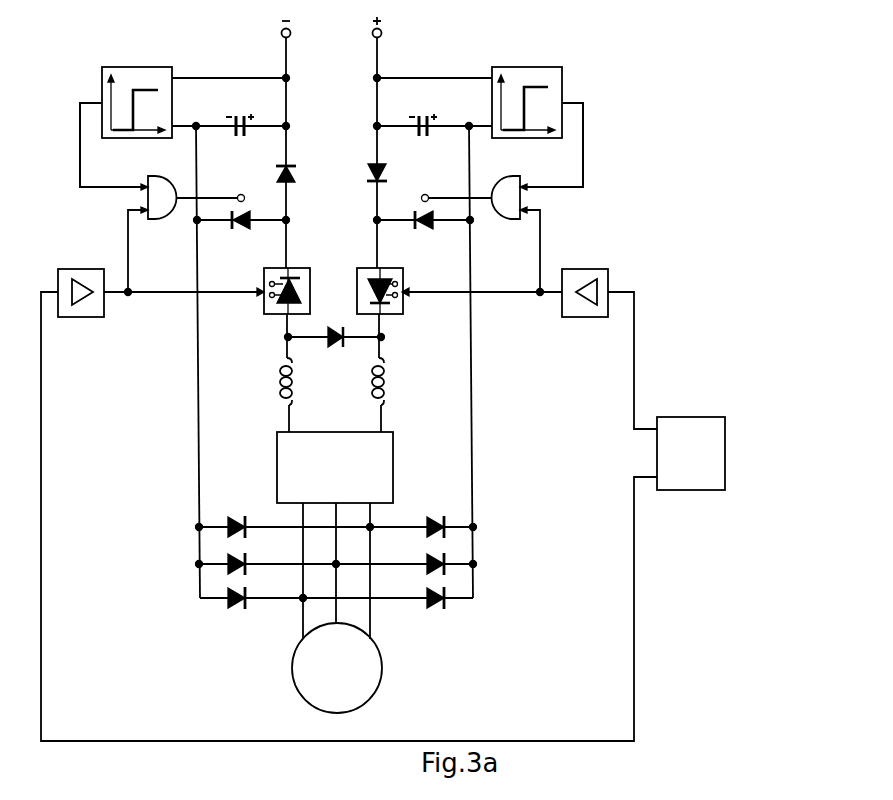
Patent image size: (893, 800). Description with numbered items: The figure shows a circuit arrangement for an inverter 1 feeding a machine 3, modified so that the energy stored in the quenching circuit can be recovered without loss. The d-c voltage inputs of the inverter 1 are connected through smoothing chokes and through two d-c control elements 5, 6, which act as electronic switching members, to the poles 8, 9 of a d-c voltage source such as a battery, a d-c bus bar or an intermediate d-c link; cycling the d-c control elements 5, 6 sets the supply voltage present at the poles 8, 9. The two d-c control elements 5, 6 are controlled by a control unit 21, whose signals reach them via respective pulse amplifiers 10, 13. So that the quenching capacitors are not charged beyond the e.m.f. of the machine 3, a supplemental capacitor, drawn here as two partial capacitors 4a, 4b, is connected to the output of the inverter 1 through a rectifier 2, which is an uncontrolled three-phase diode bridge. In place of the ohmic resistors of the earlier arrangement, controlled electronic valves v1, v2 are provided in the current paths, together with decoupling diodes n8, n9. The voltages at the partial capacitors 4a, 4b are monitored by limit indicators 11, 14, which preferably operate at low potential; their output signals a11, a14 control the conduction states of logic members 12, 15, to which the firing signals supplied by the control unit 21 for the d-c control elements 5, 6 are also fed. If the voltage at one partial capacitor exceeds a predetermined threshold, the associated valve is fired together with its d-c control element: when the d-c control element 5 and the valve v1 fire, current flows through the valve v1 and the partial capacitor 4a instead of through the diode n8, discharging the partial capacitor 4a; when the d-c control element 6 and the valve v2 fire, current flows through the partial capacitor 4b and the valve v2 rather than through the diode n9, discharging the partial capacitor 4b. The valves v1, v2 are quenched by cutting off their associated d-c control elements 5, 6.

The inverter 1 is at (344, 484).
The rectifier 2 is at (257, 580).
The machine 3 is at (382, 669).
The partial capacitor 4a is at (237, 134).
The partial capacitor 4b is at (427, 134).
The d-c control element 5 is at (303, 268).
The d-c control element 6 is at (364, 268).
The pole 8 is at (291, 33).
The pole 9 is at (372, 33).
The pulse amplifier 10 is at (93, 317).
The limit indicator 11 is at (135, 67).
The logic member 12 is at (153, 221).
The pulse amplifier 13 is at (593, 317).
The limit indicator 14 is at (500, 67).
The logic member 15 is at (515, 221).
The control unit 21 is at (704, 468).
The output signal of threshold unit 11 a11 is at (90, 145).
The output signal of threshold unit 14 a14 is at (579, 145).
The decoupling diode n8 is at (290, 180).
The decoupling diode n9 is at (373, 180).
The controlled electronic valve v1 is at (250, 226).
The controlled electronic valve v2 is at (430, 226).